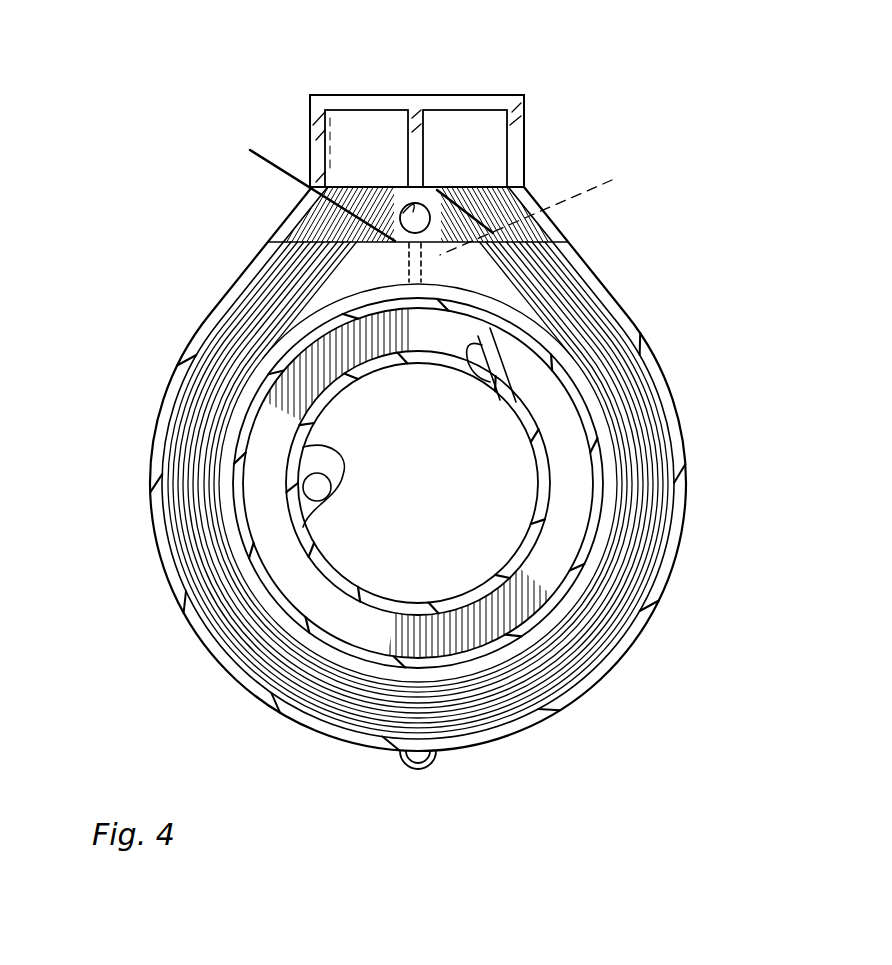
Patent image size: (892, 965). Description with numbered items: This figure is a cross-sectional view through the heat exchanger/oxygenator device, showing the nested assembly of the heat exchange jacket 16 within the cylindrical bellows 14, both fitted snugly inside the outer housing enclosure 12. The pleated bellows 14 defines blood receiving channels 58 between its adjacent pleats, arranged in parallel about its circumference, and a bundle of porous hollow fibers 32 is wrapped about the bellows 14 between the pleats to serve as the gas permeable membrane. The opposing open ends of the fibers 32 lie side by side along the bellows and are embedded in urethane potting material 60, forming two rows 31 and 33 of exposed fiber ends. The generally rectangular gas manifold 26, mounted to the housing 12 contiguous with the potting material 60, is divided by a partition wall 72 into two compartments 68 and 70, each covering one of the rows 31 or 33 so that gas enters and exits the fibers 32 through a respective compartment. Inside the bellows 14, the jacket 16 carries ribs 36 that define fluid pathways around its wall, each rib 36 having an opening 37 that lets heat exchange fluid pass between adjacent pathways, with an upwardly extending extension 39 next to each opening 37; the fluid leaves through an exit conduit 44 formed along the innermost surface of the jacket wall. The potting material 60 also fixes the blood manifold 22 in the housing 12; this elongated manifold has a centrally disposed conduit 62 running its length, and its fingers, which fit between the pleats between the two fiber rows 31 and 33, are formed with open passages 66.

The outer housing enclosure 12 is at (353, 260).
The bellows 14 is at (280, 353).
The heat exchange jacket 16 is at (520, 568).
The blood manifold 22 is at (387, 219).
The gas manifold 26 is at (336, 95).
The row of fiber ends 31 is at (380, 104).
The hollow fibers 32 is at (540, 275).
The row of fiber ends 33 is at (512, 134).
The rib 36 is at (563, 532).
The opening 37 is at (550, 357).
The extension 39 is at (468, 372).
The exit conduit 44 is at (330, 500).
The blood receiving channel 58 is at (603, 440).
The urethane potting material 60 is at (301, 182).
The conduit 62 is at (413, 212).
The open passage 66 is at (547, 207).
The compartment 68 is at (318, 140).
The compartment 70 is at (470, 172).
The partition wall 72 is at (362, 172).